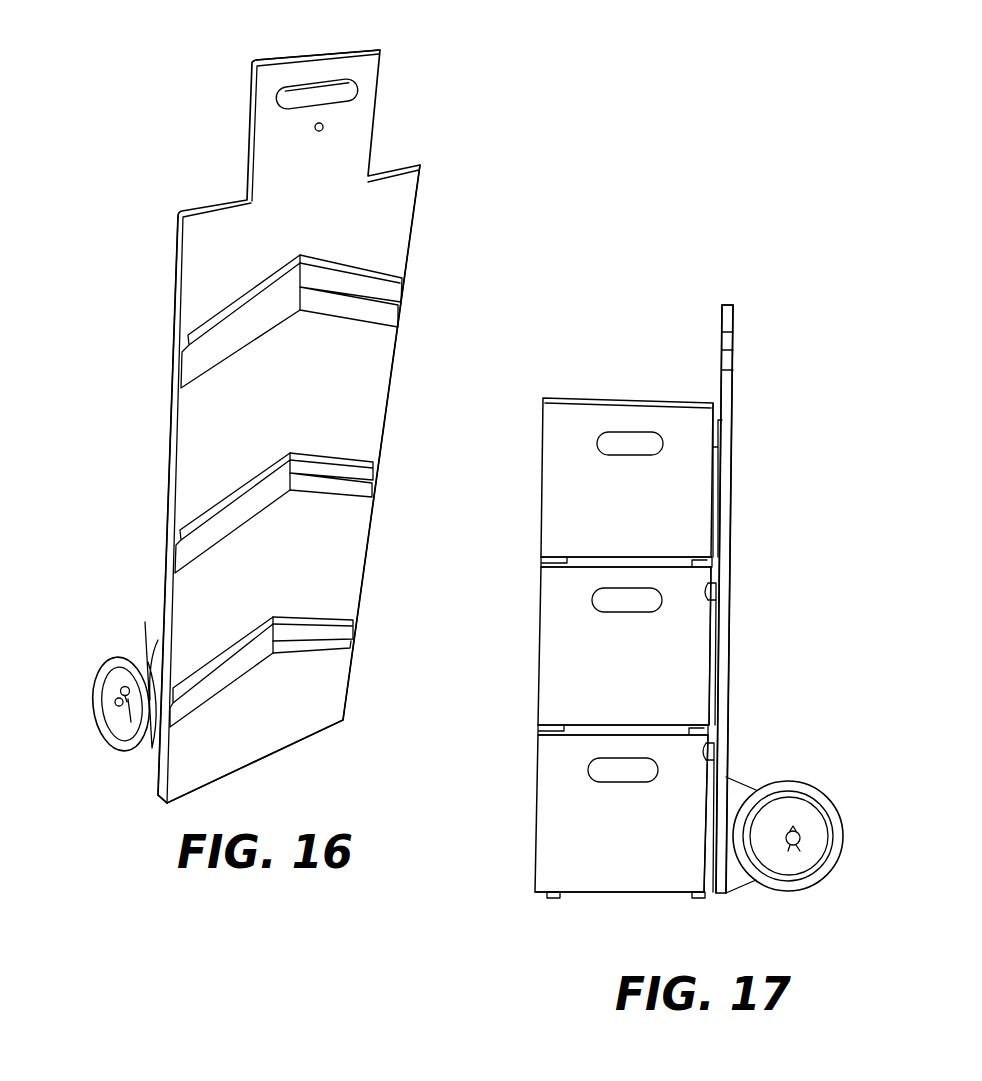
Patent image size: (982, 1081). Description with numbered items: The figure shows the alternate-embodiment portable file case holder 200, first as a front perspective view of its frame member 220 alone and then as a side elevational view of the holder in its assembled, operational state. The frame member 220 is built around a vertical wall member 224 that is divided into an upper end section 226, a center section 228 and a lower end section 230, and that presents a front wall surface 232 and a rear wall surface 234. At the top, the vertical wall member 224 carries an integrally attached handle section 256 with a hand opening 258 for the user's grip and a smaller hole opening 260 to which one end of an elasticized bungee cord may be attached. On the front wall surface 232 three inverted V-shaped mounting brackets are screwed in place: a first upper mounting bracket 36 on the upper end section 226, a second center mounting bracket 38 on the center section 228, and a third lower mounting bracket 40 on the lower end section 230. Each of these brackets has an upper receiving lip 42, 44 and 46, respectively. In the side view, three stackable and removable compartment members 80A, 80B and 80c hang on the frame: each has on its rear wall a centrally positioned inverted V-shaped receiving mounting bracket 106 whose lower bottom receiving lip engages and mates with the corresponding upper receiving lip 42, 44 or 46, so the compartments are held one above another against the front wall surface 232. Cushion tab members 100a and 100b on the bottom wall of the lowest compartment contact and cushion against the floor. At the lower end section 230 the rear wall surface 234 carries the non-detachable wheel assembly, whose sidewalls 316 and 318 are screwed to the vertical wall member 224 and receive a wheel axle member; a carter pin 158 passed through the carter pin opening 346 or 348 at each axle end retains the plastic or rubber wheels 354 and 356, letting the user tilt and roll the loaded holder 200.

In FIG. 16, the portable file case holder 200 is at (185, 70).
In FIG. 17, the portable file case holder 200 is at (657, 295).
In FIG. 16, the frame member 220 is at (268, 403).
In FIG. 17, the frame member 220 is at (732, 578).
In FIG. 16, the vertical wall member 224 is at (402, 206).
In FIG. 17, the vertical wall member 224 is at (724, 599).
In FIG. 16, the upper end section 226 is at (193, 305).
In FIG. 17, the upper end section 226 is at (733, 432).
In FIG. 16, the center section 228 is at (350, 442).
In FIG. 17, the center section 228 is at (720, 600).
In FIG. 16, the lower end section 230 is at (342, 682).
In FIG. 17, the lower end section 230 is at (706, 748).
In FIG. 16, the front wall surface 232 is at (327, 362).
In FIG. 17, the front wall surface 232 is at (717, 398).
In FIG. 17, the rear wall surface 234 is at (733, 498).
In FIG. 16, the handle section 256 is at (380, 50).
In FIG. 17, the handle section 256 is at (739, 309).
In FIG. 16, the hand opening 258 is at (333, 93).
In FIG. 17, the hand opening 258 is at (740, 330).
In FIG. 16, the hole opening 260 is at (324, 127).
In FIG. 17, the hole opening 260 is at (740, 358).
In FIG. 16, the first upper inverted V-shaped mounting bracket 36 is at (291, 310).
In FIG. 17, the first upper inverted V-shaped mounting bracket 36 is at (720, 466).
In FIG. 16, the second center inverted V-shaped mounting bracket 38 is at (274, 502).
In FIG. 17, the second center inverted V-shaped mounting bracket 38 is at (715, 639).
In FIG. 16, the third lower inverted V-shaped mounting bracket 40 is at (261, 661).
In FIG. 17, the third lower inverted V-shaped mounting bracket 40 is at (710, 817).
In FIG. 16, the upper receiving lip 42 is at (237, 298).
In FIG. 16, the upper receiving lip 44 is at (242, 488).
In FIG. 16, the upper receiving lip 46 is at (222, 653).
In FIG. 17, the inverted V-shaped receiving mounting bracket 106 is at (623, 724).
In FIG. 17, the compartment member 80A is at (563, 504).
In FIG. 17, the compartment member 80B is at (563, 636).
In FIG. 17, the compartment member 80c is at (548, 800).
In FIG. 17, the cushion tab member 100a is at (551, 898).
In FIG. 17, the cushion tab member 100b is at (698, 898).
In FIG. 16, the carter pin 158 is at (92, 694).
In FIG. 17, the carter pin 158 is at (818, 825).
In FIG. 17, the sidewall 316 is at (754, 792).
In FIG. 16, the sidewall 318 is at (152, 672).
In FIG. 17, the carter pin opening 346 is at (800, 833).
In FIG. 16, the carter pin opening 348 is at (121, 694).
In FIG. 17, the wheel 354 is at (830, 870).
In FIG. 16, the wheel 356 is at (115, 657).